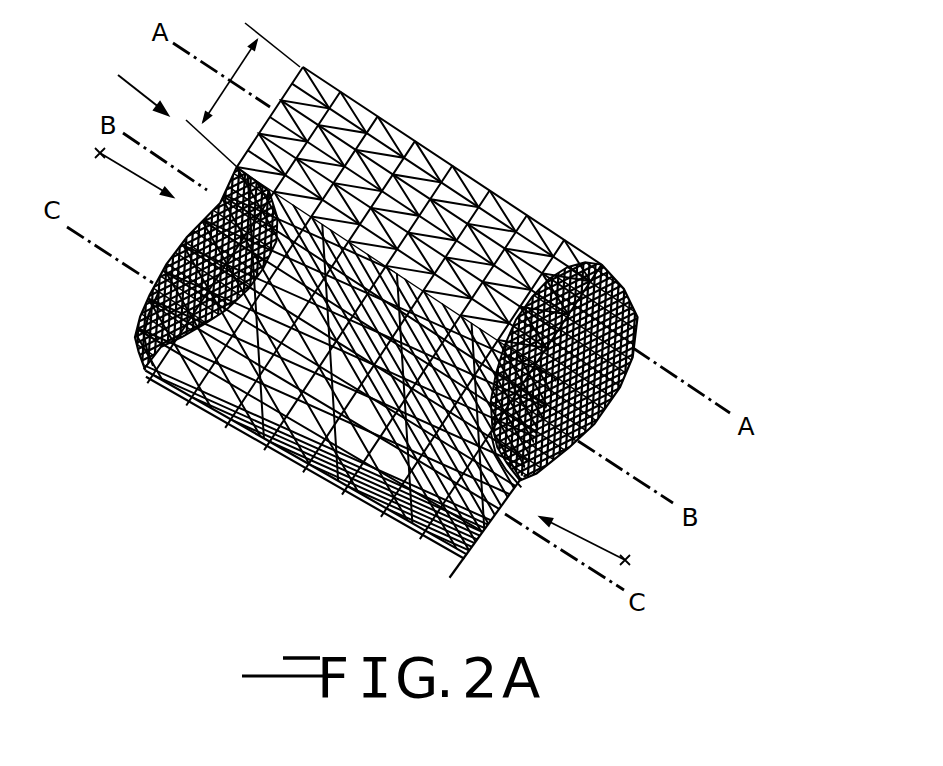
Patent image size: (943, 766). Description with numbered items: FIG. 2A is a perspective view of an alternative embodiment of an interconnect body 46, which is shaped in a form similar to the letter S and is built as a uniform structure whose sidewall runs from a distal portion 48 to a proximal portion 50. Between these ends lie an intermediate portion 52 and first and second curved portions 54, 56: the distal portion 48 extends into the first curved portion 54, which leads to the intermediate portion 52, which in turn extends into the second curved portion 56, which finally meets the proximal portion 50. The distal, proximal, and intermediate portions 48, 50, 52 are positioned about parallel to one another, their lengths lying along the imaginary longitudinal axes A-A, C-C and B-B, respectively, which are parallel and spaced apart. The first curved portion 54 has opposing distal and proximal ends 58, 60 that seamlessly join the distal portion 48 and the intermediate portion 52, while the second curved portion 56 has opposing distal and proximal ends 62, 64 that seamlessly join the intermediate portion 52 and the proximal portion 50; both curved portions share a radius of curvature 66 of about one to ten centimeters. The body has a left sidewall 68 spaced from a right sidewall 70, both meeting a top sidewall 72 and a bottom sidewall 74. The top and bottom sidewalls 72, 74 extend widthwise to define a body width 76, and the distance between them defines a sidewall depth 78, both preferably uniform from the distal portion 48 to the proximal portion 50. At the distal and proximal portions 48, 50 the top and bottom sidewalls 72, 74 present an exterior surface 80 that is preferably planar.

The interconnect body 46 is at (133, 81).
The distal portion 48 is at (473, 193).
The proximal portion 50 is at (326, 482).
The intermediate portion 52 is at (198, 402).
The first curved portion 54 is at (637, 340).
The second curved portion 56 is at (192, 233).
The distal end of the first curved portion 58 is at (600, 266).
The proximal end of the first curved portion 60 is at (521, 475).
The distal end of the second curved portion 62 is at (178, 405).
The proximal end of the second curved portion 64 is at (140, 358).
The radius of curvature 66 is at (133, 177).
The left sidewall 68 is at (240, 189).
The right sidewall 70 is at (456, 570).
The top sidewall 72 is at (387, 153).
The bottom sidewall 74 is at (420, 522).
The body width 76 is at (242, 62).
The sidewall depth 78 is at (358, 515).
The exterior surface 80 is at (352, 130).